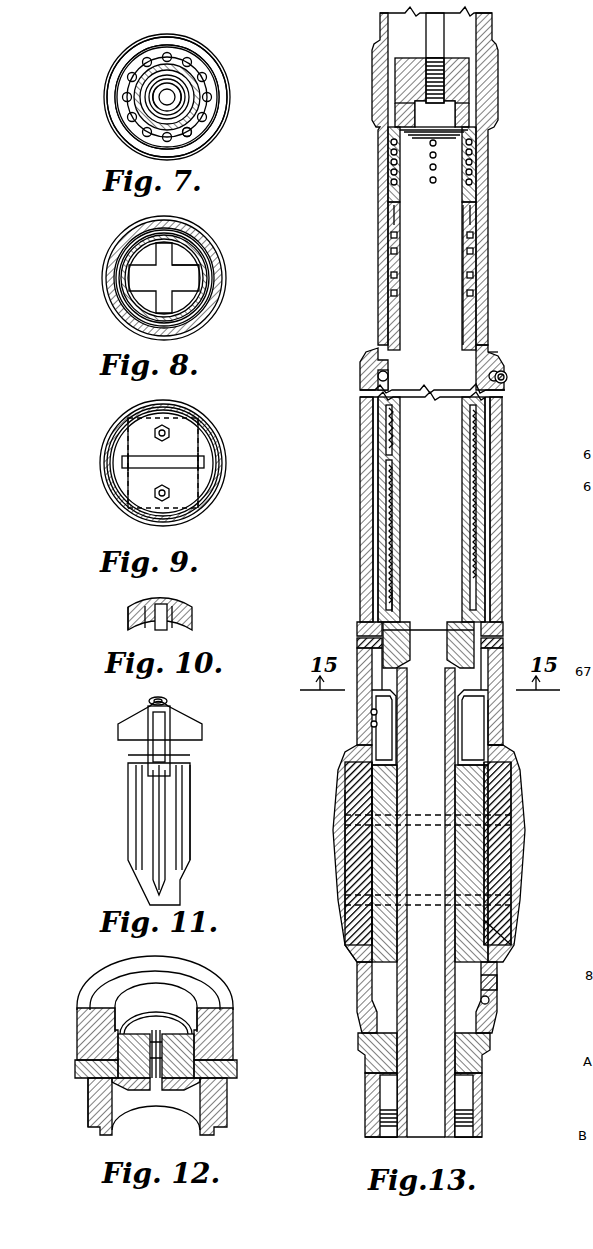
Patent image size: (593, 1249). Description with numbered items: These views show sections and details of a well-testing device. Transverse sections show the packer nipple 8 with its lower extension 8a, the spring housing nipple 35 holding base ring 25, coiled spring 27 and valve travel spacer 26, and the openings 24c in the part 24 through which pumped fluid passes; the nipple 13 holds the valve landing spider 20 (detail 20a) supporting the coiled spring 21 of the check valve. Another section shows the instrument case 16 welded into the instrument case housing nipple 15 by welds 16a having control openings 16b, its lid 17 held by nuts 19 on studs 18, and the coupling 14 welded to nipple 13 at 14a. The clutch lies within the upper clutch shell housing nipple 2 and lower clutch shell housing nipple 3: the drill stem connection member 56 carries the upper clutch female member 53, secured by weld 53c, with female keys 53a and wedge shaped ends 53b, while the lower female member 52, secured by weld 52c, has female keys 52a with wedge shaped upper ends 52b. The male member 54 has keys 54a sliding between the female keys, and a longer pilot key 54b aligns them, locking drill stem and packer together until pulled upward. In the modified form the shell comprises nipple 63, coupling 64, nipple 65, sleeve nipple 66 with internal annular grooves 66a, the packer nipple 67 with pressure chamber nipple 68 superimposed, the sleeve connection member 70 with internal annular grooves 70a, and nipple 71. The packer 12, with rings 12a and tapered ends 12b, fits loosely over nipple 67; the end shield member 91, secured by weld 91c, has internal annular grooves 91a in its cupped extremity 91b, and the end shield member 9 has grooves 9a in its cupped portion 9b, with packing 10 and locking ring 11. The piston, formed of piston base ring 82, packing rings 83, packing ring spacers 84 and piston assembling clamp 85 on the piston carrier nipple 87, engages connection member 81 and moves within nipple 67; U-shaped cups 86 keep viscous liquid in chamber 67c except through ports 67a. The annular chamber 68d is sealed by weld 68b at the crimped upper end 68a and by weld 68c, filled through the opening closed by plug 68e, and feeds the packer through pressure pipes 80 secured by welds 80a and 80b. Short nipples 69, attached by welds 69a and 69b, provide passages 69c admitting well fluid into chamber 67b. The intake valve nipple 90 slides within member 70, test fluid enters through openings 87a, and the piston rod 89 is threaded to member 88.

In FIG. 12, the upper clutch shell housing nipple 2 is at (172, 965).
In FIG. 12, the lower clutch shell housing nipple 3 is at (90, 1112).
In FIG. 7, the packer nipple 8 is at (128, 50).
In FIG. 8, the lower extension of packer nipple 8a is at (126, 258).
In FIG. 13, the end shield member 9 is at (512, 958).
In FIG. 13, the internal annular grooves 9a is at (478, 905).
In FIG. 13, the cupped portion 9b is at (520, 935).
In FIG. 13, the packing 10 is at (500, 985).
In FIG. 13, the locking ring 11 is at (494, 1000).
In FIG. 13, the packer 12 is at (347, 880).
In FIG. 13, the packer rings 12a is at (346, 822).
In FIG. 13, the tapered ends 12b is at (350, 785).
In FIG. 7, the nipple 13 is at (116, 70).
In FIG. 8, the nipple 13 is at (180, 235).
In FIG. 9, the nipple 13 is at (190, 412).
In FIG. 10, the coupling 14 is at (186, 606).
In FIG. 9, the weld 14a is at (224, 466).
In FIG. 10, the instrument case housing nipple 15 is at (192, 624).
In FIG. 10, the instrument case 16 is at (133, 633).
In FIG. 10, the welds 16a is at (142, 620).
In FIG. 10, the control openings 16b is at (160, 612).
In FIG. 9, the lid 17 is at (188, 440).
In FIG. 9, the studs 18 is at (172, 493).
In FIG. 9, the nuts 19 is at (156, 433).
In FIG. 8, the valve landing spider 20 is at (156, 285).
In FIG. 8, the cross arm 20a is at (196, 276).
In FIG. 8, the coiled spring 21 is at (214, 300).
In FIG. 7, the bolt circle 24 is at (205, 80).
In FIG. 7, the openings 24c is at (190, 130).
In FIG. 7, the base ring 25 is at (176, 72).
In FIG. 7, the valve travel spacer 26 is at (158, 97).
In FIG. 7, the coiled spring 27 is at (132, 112).
In FIG. 7, the spring housing nipple 35 is at (182, 100).
In FIG. 12, the lower female clutch member 52 is at (238, 1072).
In FIG. 12, the female keys 52a is at (126, 1086).
In FIG. 12, the wedge shaped upper ends 52b is at (230, 1112).
In FIG. 12, the weld 52c is at (112, 1080).
In FIG. 12, the upper clutch female member 53 is at (238, 1012).
In FIG. 12, the female keys 53a is at (92, 1004).
In FIG. 12, the upper wedge shaped ends 53b is at (205, 1002).
In FIG. 12, the weld 53c is at (236, 1046).
In FIG. 11, the male clutch member 54 is at (170, 757).
In FIG. 11, the male keys 54a is at (190, 802).
In FIG. 11, the longest key 54b is at (170, 834).
In FIG. 12, the drill stem connection member 56 is at (130, 983).
In FIG. 13, the nipple 63 is at (494, 27).
In FIG. 13, the coupling 64 is at (476, 77).
In FIG. 13, the nipple 65 is at (490, 163).
In FIG. 13, the sleeve nipple 66 is at (480, 263).
In FIG. 13, the internal annular grooves 66a is at (476, 199).
In FIG. 13, the packer nipple 67 is at (384, 468).
In FIG. 13, the ports 67a is at (380, 376).
In FIG. 13, the chamber 67b is at (380, 1010).
In FIG. 13, the chamber 67c is at (497, 363).
In FIG. 13, the pressure chamber nipple 68 is at (502, 458).
In FIG. 13, the crimped upper end 68a is at (362, 358).
In FIG. 13, the weld 68b is at (500, 358).
In FIG. 13, the weld 68c is at (502, 726).
In FIG. 13, the annular chamber 68d is at (490, 433).
In FIG. 13, the plug 68e is at (508, 377).
In FIG. 13, the short nipples 69 is at (502, 660).
In FIG. 13, the welds 69a is at (360, 622).
In FIG. 13, the welds 69b is at (362, 638).
In FIG. 13, the passages 69c is at (358, 644).
In FIG. 13, the sleeve connection member 70 is at (470, 1060).
In FIG. 13, the internal annular grooves 70a is at (378, 1057).
In FIG. 13, the nipple 71 is at (470, 1127).
In FIG. 13, the pressure pipes 80 is at (368, 750).
In FIG. 13, the weld 80a is at (346, 845).
In FIG. 13, the weld 80b is at (386, 697).
In FIG. 13, the connection member 81 is at (386, 598).
In FIG. 13, the piston base ring 82 is at (503, 571).
In FIG. 13, the packing rings 83 is at (384, 500).
In FIG. 13, the packing ring spacers 84 is at (478, 548).
In FIG. 13, the piston assembling clamp 85 is at (386, 435).
In FIG. 13, the U-shaped cups 86 is at (390, 236).
In FIG. 13, the piston carrier nipple 87 is at (470, 250).
In FIG. 13, the openings 87a is at (392, 156).
In FIG. 13, the member 88 is at (412, 78).
In FIG. 13, the piston rod 89 is at (430, 30).
In FIG. 13, the intake valve nipple 90 is at (382, 1112).
In FIG. 13, the end shield member 91 is at (500, 756).
In FIG. 13, the internal annular grooves 91a is at (522, 780).
In FIG. 13, the cupped extremity 91b is at (522, 800).
In FIG. 13, the weld 91c is at (372, 716).